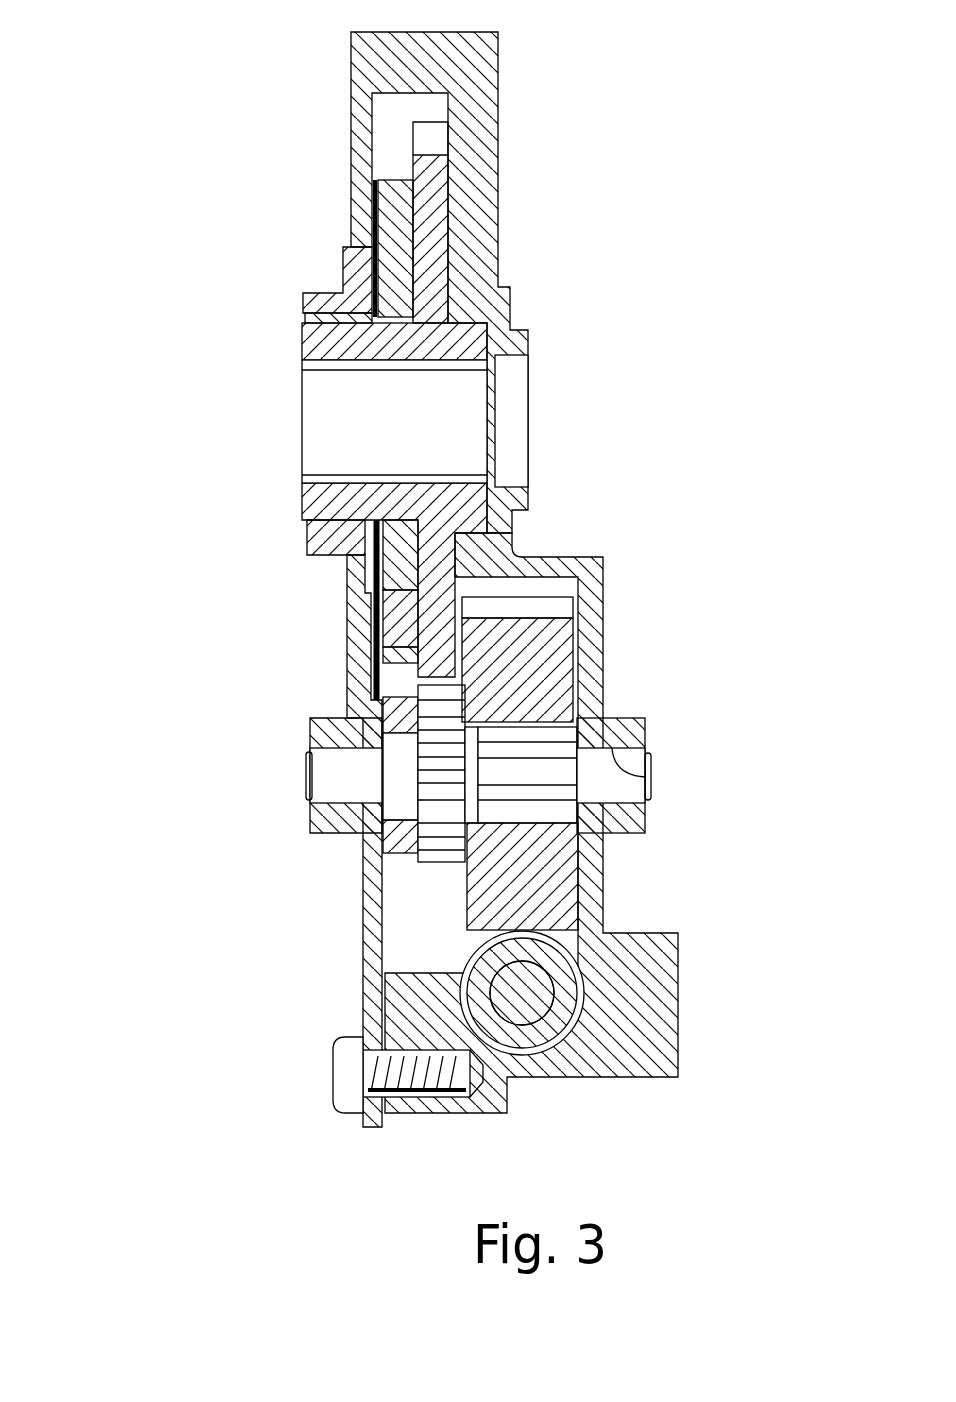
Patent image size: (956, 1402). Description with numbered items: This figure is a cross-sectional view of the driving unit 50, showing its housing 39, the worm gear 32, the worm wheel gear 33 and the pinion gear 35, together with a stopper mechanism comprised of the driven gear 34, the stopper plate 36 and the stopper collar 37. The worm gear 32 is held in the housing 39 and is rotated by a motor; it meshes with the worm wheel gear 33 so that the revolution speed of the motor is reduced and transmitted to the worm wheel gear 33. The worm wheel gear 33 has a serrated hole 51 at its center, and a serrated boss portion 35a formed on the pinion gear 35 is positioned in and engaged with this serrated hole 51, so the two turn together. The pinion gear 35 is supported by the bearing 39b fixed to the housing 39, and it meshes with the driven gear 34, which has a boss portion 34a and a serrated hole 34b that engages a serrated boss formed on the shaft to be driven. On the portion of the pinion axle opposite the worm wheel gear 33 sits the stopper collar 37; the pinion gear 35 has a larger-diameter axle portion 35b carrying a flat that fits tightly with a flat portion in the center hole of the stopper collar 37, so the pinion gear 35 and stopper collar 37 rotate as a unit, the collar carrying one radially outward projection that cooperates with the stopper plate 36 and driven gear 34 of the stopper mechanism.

The driving unit 50 is at (293, 100).
The driven gear 34 is at (443, 108).
The housing 39 is at (500, 150).
The stopper plate 36 is at (392, 220).
The boss portion 34a is at (325, 342).
The serrated hole 34b is at (323, 378).
The worm wheel gear 33 is at (557, 595).
The serrated hole 51 is at (580, 735).
The bearing 39b is at (651, 775).
The axle portion 35b is at (405, 757).
The serrated boss portion 35a is at (547, 803).
The stopper collar 37 is at (375, 882).
The pinion gear 35 is at (440, 863).
The worm gear 32 is at (590, 970).